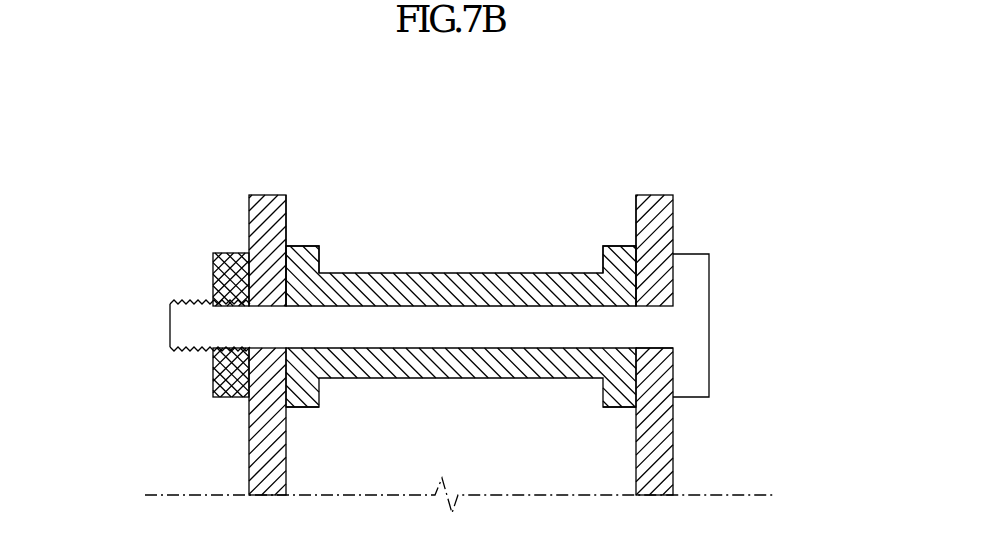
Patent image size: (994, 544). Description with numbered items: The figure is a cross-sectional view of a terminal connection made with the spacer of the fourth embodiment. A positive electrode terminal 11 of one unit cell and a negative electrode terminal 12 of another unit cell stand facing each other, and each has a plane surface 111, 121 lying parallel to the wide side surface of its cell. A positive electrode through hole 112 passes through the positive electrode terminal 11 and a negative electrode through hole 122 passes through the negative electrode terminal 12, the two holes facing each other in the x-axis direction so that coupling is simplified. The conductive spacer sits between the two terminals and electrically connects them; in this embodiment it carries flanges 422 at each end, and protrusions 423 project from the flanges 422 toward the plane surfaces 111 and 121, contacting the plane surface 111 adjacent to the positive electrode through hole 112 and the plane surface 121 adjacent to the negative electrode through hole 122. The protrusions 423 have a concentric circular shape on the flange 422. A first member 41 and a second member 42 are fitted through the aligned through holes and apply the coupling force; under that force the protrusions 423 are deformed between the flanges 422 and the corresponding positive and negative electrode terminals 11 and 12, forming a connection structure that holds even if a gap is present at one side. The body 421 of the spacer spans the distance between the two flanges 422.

The positive electrode terminal 11 is at (667, 174).
The plane surface 111 is at (634, 216).
The positive electrode through hole 112 is at (656, 348).
The negative electrode terminal 12 is at (245, 174).
The plane surface 121 is at (288, 212).
The negative electrode through hole 122 is at (262, 346).
The first member 41 is at (697, 298).
The second member 42 is at (213, 272).
The plate portion 421 is at (429, 273).
The flange 422 is at (308, 247).
The protrusion 423 is at (250, 408).